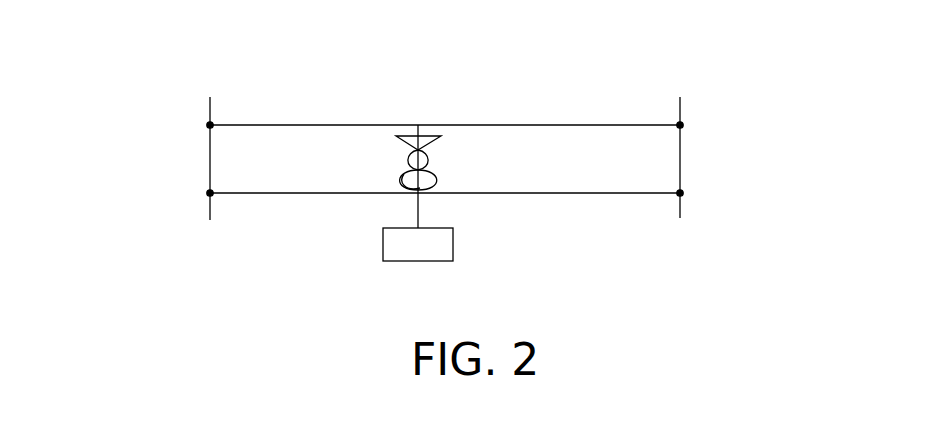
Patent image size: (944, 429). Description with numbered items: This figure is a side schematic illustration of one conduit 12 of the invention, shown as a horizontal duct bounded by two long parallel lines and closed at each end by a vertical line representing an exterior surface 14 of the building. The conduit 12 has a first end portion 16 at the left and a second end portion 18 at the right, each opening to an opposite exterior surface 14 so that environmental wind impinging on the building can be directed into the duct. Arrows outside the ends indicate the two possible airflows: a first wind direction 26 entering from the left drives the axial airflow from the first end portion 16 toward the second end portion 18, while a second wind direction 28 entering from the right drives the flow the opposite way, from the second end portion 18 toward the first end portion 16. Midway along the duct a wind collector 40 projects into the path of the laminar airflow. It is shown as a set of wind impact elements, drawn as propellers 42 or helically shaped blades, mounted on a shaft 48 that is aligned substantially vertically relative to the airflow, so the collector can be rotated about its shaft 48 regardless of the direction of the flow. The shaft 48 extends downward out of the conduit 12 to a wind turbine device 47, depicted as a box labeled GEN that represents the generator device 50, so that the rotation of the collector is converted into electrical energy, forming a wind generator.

The conduit 12 is at (312, 146).
The exterior surface 14 is at (208, 110).
The first end portion 16 is at (205, 178).
The second end portion 18 is at (686, 137).
The first wind direction 26 is at (192, 159).
The second wind direction 28 is at (702, 158).
The wind collector 40 is at (457, 153).
The propeller 42 is at (425, 140).
The shaft 48 is at (407, 178).
The wind turbine device 47 is at (370, 249).
The generator device 50 is at (453, 242).